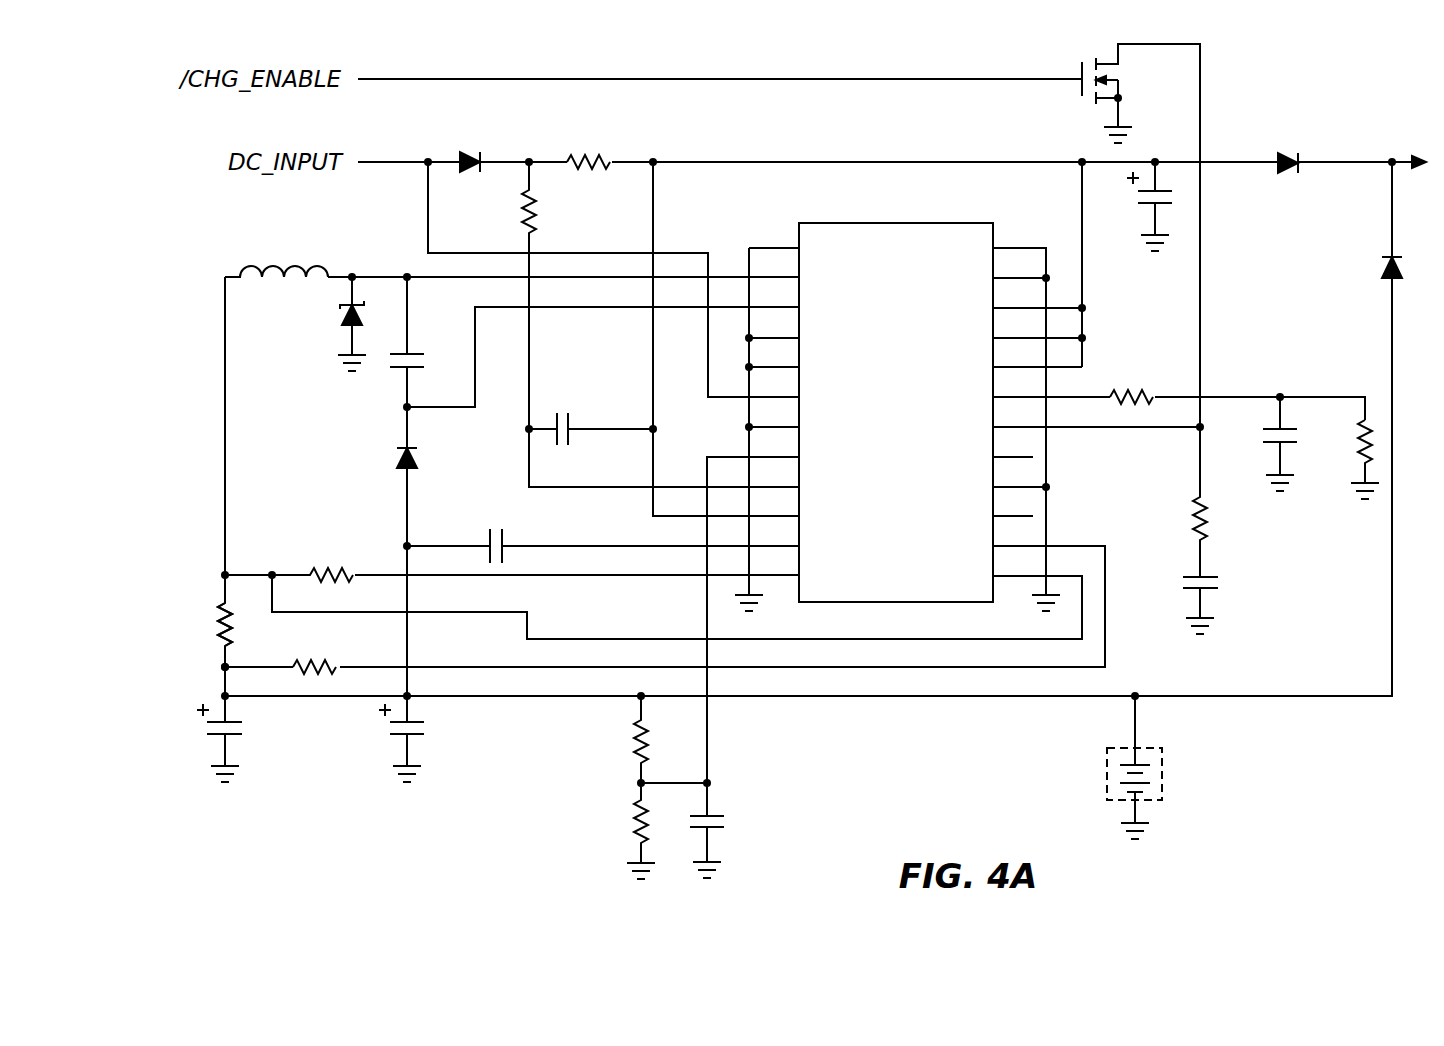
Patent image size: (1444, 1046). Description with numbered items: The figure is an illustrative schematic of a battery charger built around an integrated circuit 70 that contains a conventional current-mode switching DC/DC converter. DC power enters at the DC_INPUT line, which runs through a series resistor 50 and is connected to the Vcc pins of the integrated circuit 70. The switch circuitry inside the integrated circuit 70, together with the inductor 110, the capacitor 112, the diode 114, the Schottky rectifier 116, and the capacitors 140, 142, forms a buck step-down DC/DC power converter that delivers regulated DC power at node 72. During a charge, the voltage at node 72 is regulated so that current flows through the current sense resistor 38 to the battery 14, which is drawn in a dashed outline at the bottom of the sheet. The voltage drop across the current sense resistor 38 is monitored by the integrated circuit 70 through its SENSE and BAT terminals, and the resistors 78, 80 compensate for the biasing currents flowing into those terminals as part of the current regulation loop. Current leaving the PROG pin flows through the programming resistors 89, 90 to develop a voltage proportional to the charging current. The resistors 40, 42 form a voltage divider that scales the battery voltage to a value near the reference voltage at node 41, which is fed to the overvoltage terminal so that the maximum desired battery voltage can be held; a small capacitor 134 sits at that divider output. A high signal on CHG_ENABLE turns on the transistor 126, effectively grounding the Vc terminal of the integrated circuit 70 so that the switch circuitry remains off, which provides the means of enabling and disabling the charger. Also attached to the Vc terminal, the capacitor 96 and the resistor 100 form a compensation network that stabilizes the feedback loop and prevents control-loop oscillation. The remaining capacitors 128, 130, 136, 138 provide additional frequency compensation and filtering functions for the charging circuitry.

The battery 14 is at (1165, 752).
The current sense resistor 38 is at (236, 630).
The resistor 40 is at (635, 740).
The node 41 is at (712, 782).
The resistor 42 is at (638, 830).
The resistor 50 is at (587, 158).
The integrated circuit 70 is at (855, 222).
The node 72 is at (220, 668).
The resistor 78 is at (316, 658).
The resistor 80 is at (335, 568).
The programming resistor 89 is at (1133, 392).
The programming resistor 90 is at (1360, 448).
The capacitor 96 is at (1185, 592).
The resistor 100 is at (1195, 520).
The inductor 110 is at (288, 268).
The capacitor 112 is at (420, 353).
The diode 114 is at (395, 460).
The Schottky rectifier 116 is at (330, 315).
The transistor 126 is at (1085, 103).
The capacitor 128 is at (576, 418).
The capacitor 130 is at (490, 530).
The capacitor 134 is at (720, 826).
The capacitor 136 is at (1148, 203).
The capacitor 138 is at (1268, 452).
The capacitor 140 is at (248, 720).
The capacitor 142 is at (392, 740).